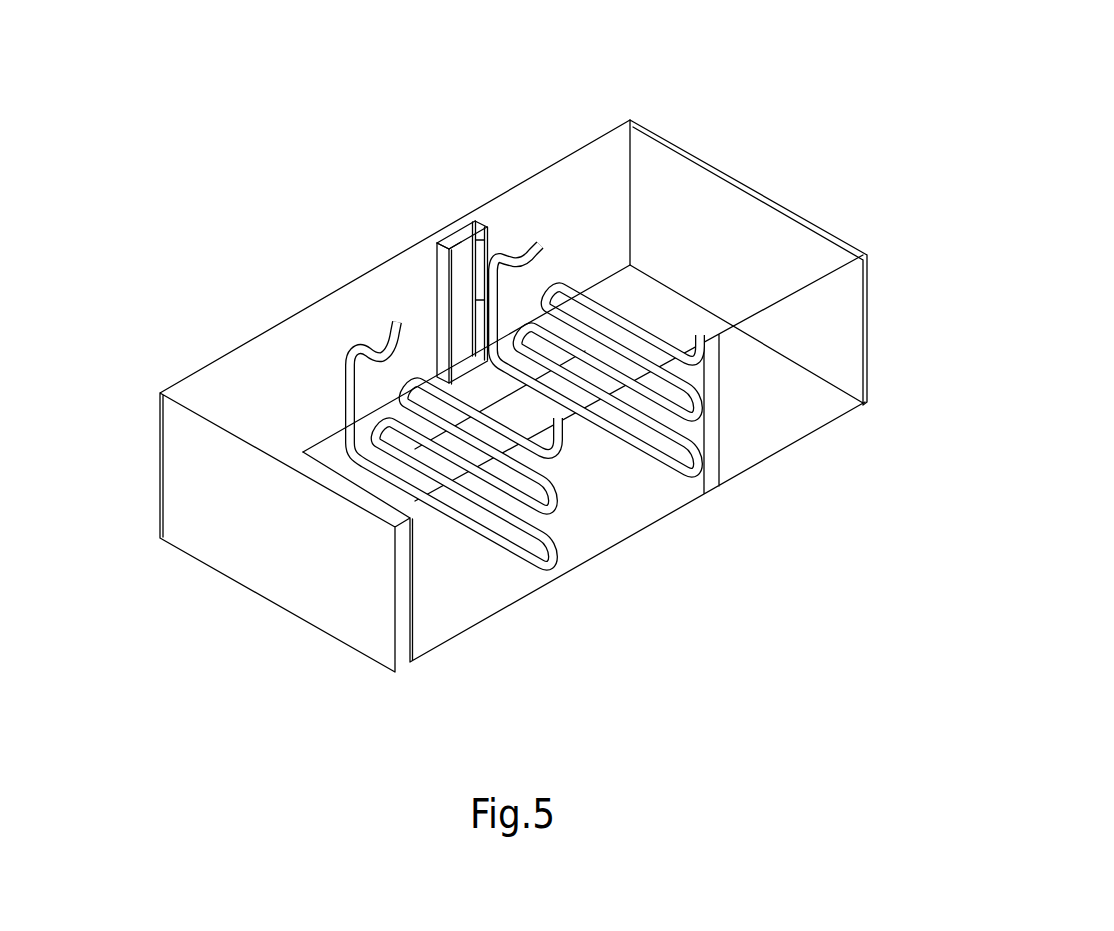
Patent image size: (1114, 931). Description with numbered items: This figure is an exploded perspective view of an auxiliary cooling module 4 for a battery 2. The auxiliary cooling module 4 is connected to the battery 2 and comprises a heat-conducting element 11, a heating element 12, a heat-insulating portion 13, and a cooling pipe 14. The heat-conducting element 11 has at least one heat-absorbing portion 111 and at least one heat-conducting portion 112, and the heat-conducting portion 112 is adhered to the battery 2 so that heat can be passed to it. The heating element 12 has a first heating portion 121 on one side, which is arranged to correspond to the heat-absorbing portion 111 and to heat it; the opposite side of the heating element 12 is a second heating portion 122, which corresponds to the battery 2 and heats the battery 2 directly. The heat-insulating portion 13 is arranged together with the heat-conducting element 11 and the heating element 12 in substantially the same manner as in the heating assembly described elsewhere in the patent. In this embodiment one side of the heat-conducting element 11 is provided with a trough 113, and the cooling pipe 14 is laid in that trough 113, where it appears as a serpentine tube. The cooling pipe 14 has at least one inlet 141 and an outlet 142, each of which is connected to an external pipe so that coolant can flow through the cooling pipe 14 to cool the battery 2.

The battery 2 is at (487, 345).
The auxiliary cooling module 4 is at (1022, 148).
The heat-conducting element 11 is at (502, 226).
The heat-absorbing portion 111 is at (480, 253).
The heat-conducting portion 112 is at (492, 237).
The trough 113 is at (573, 297).
The heating element 12 is at (325, 248).
The first heating portion 121 is at (447, 243).
The second heating portion 122 is at (440, 290).
The heat-insulating portion 13 is at (752, 192).
The cooling pipe 14 is at (531, 456).
The inlet 141 is at (448, 377).
The outlet 142 is at (465, 362).